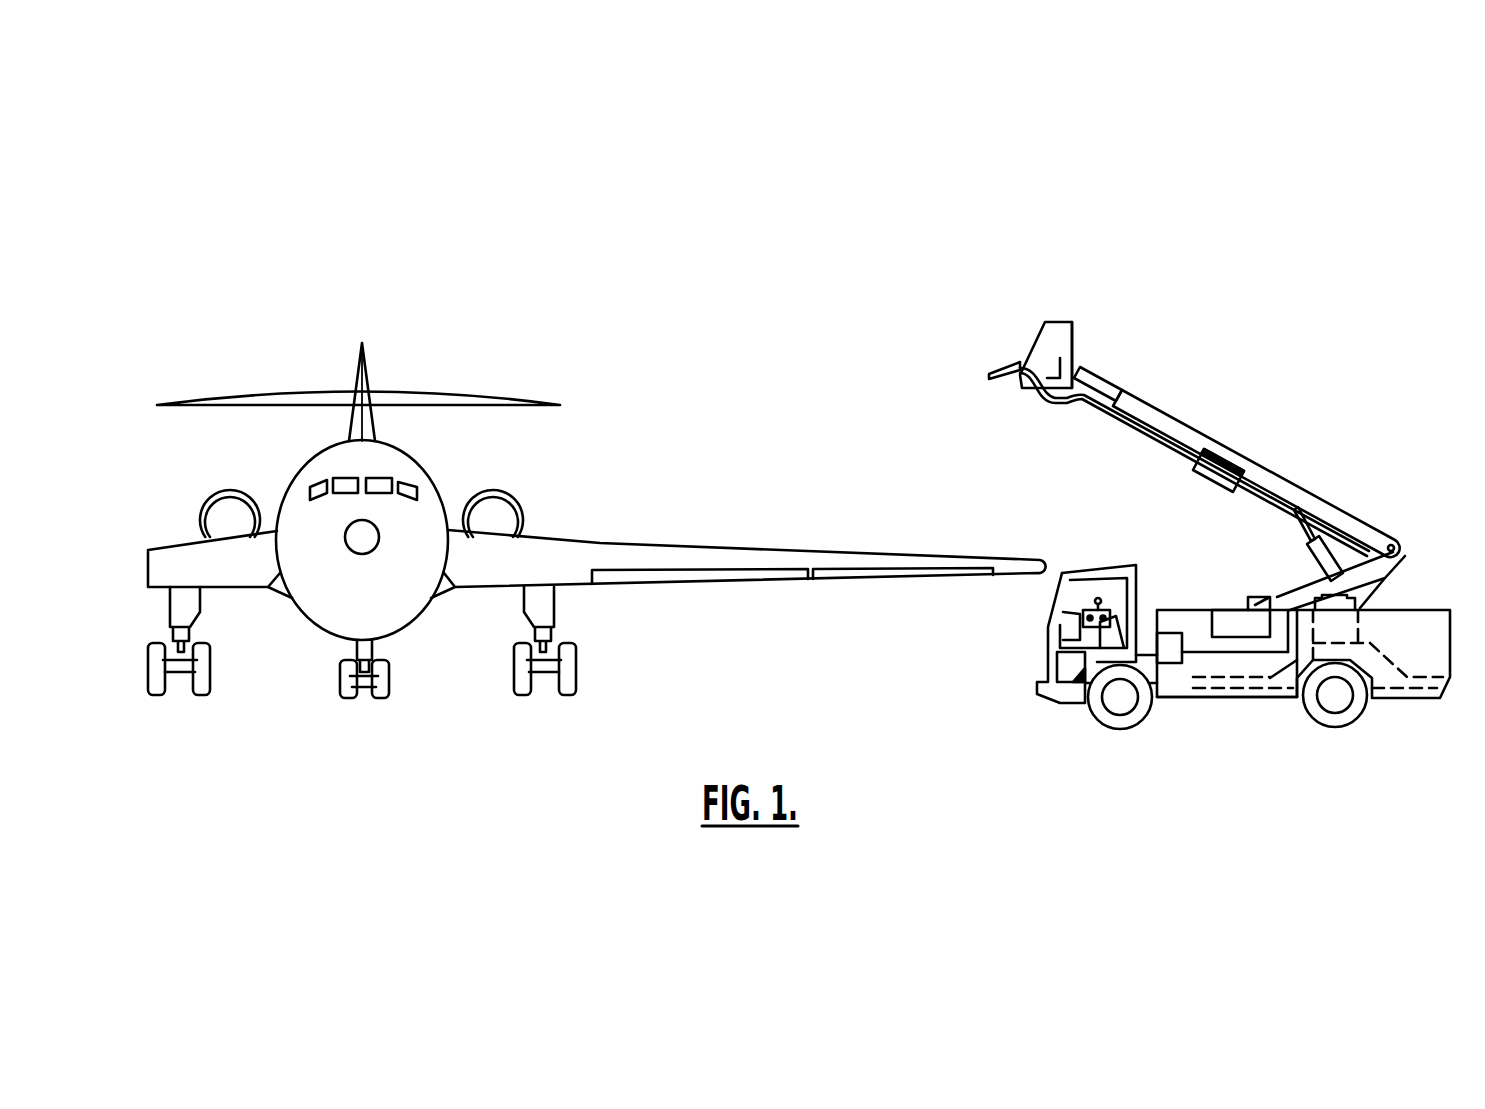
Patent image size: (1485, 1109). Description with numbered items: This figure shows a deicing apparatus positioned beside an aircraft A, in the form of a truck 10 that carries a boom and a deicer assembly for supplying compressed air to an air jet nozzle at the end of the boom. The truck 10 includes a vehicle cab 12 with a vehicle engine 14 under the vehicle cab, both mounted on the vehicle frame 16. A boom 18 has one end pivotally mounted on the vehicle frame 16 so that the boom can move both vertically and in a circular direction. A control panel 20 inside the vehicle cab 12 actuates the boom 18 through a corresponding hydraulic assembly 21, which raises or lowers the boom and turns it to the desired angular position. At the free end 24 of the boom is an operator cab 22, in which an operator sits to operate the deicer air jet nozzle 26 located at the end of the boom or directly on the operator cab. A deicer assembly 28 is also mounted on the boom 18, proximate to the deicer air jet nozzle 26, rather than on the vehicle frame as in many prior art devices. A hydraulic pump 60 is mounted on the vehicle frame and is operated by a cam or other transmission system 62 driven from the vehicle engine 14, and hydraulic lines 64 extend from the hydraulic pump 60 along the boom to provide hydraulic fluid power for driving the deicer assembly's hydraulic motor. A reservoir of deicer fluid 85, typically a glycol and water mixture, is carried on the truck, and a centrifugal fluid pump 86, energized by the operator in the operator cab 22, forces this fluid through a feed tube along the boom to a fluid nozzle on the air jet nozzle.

The aircraft A is at (645, 540).
The truck 10 is at (1388, 724).
The vehicle cab 12 is at (1079, 600).
The vehicle engine 14 is at (1057, 665).
The vehicle frame 16 is at (1238, 690).
The boom 18 is at (1198, 430).
The control panel 20 is at (1112, 612).
The hydraulic assembly 21 is at (1347, 632).
The operator cab 22 is at (1057, 322).
The free end 24 is at (1083, 328).
The deicer air jet nozzle 26 is at (997, 361).
The deicer assembly 28 is at (1196, 478).
The hydraulic pump 60 is at (1176, 658).
The transmission system 62 is at (1148, 702).
The hydraulic lines 64 is at (1200, 653).
The reservoir of deicer fluid 85 is at (1220, 610).
The centrifugal fluid pump 86 is at (1358, 608).